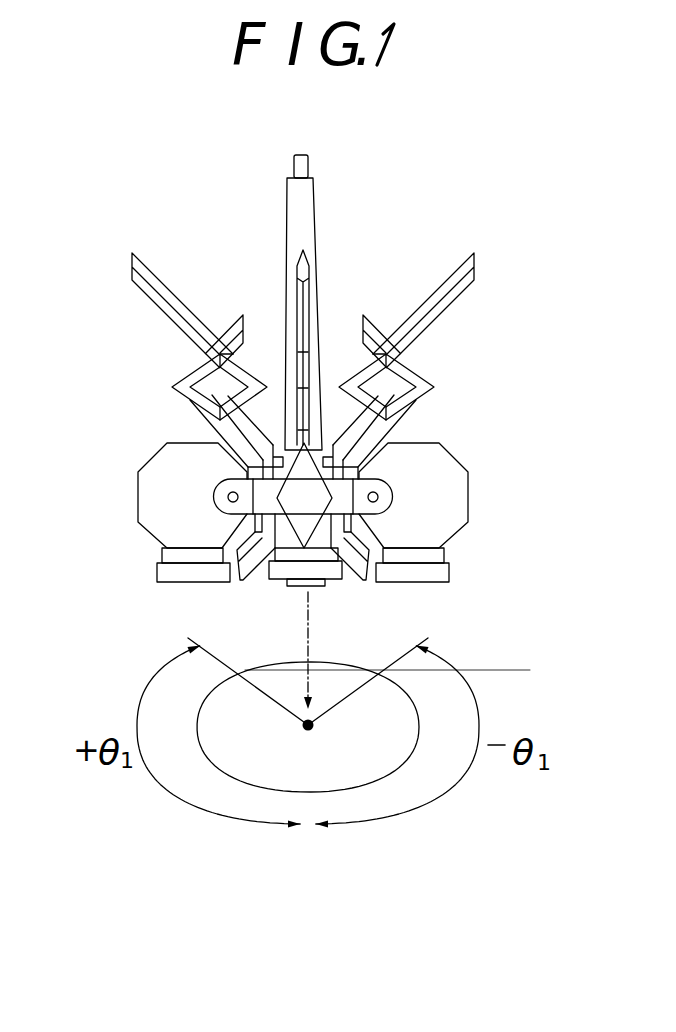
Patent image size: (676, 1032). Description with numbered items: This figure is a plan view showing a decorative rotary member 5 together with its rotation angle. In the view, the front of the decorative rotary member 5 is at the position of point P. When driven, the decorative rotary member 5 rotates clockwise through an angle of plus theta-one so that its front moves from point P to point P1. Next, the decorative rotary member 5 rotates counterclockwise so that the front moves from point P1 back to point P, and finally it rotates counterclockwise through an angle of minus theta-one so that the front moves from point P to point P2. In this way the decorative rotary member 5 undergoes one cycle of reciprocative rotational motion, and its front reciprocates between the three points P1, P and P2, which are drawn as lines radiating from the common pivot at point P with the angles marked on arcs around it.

The decorative rotary member 5 is at (446, 421).
The point P is at (308, 725).
The point P1 is at (248, 673).
The point P2 is at (368, 673).